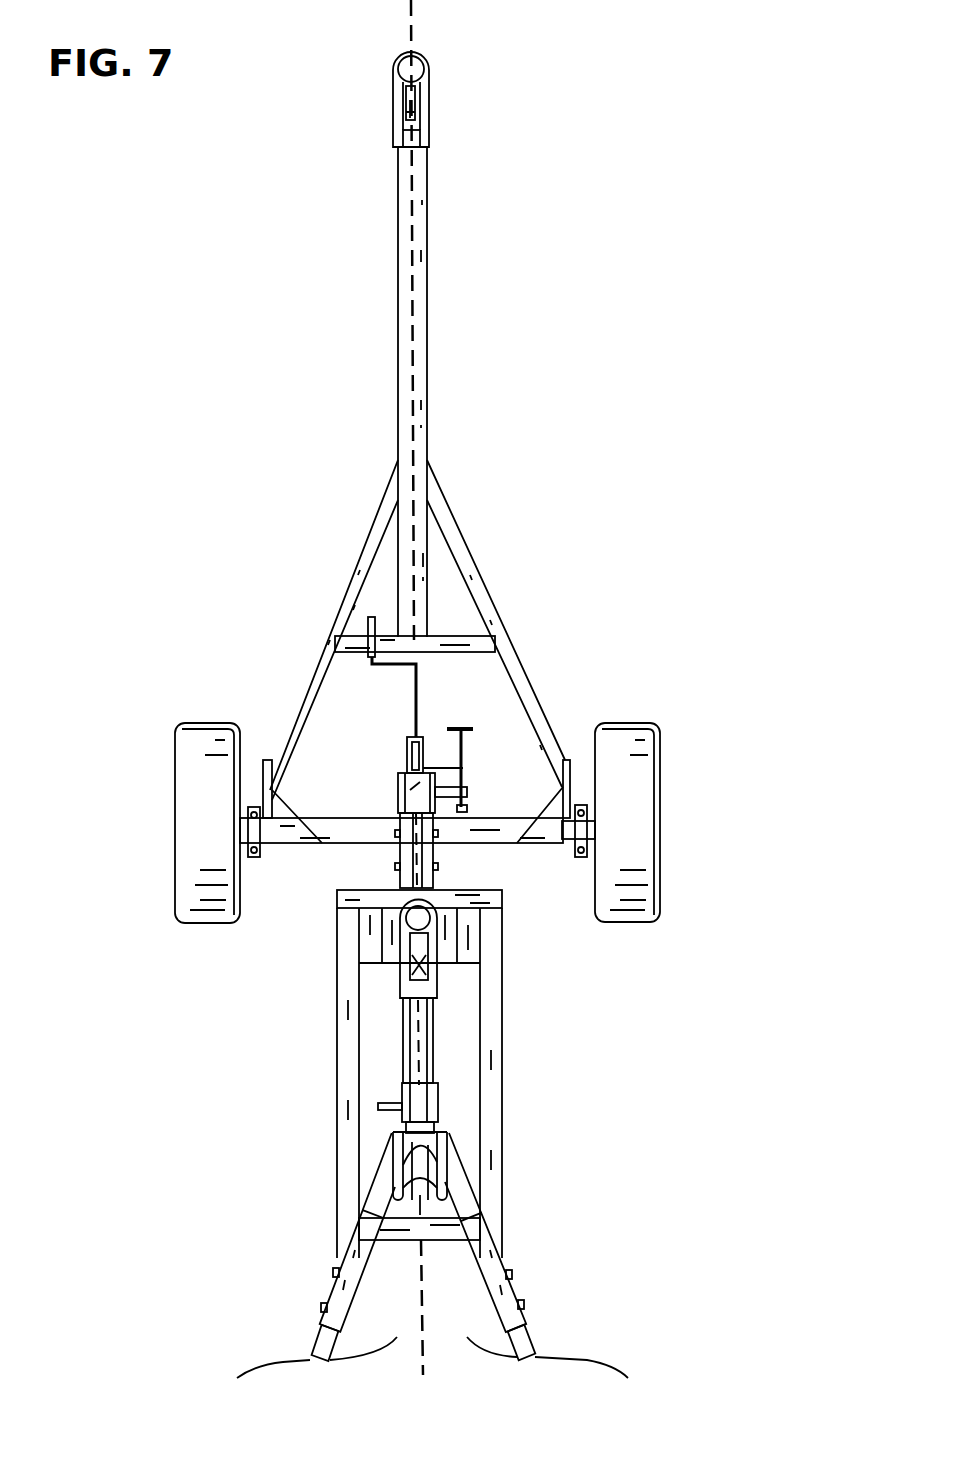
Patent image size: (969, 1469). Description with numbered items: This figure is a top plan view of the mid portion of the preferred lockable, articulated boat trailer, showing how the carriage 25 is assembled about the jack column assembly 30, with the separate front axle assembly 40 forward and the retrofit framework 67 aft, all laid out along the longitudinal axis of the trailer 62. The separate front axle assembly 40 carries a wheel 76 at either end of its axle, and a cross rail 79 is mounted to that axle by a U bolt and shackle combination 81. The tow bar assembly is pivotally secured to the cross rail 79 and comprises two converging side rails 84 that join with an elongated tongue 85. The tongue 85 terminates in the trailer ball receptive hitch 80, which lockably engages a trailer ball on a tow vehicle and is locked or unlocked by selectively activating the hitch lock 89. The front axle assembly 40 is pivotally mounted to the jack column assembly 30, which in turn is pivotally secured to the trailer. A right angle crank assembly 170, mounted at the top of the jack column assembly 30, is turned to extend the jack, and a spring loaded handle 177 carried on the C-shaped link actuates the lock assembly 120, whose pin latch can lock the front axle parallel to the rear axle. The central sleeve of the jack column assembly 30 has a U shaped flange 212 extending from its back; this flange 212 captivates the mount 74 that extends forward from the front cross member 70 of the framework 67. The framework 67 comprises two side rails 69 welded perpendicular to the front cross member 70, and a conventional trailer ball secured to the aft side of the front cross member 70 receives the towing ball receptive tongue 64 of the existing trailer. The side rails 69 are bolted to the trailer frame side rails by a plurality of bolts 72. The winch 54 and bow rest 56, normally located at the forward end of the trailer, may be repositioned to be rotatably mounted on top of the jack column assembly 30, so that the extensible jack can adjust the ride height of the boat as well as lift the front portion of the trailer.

The longitudinal axis of the trailer 62 is at (412, 30).
The trailer ball receptive hitch 80 is at (418, 60).
The hitch lock 89 is at (413, 127).
The elongated tongue 85 is at (418, 343).
The converging side rails 84 is at (440, 490).
The lock assembly 120 is at (437, 748).
The right angle crank assembly 170 is at (392, 775).
The jack column assembly 30 is at (387, 797).
The spring loaded handle 177 is at (478, 722).
The separate front axle assembly 40 is at (597, 668).
The cross rail 79 is at (497, 830).
The U bolt and shackle combination 81 is at (594, 827).
The wheel 76 is at (620, 865).
The U shaped flange 212 is at (438, 848).
The front cross member 70 is at (385, 898).
The side rails 69 is at (490, 1097).
The towing ball receptive tongue 64 is at (445, 982).
The winch 54 is at (397, 1092).
The bow rest 56 is at (433, 1170).
The framework 67 is at (522, 1237).
The bolts 72 is at (333, 1272).
The mount 74 is at (408, 843).
The carriage 25 is at (582, 1033).